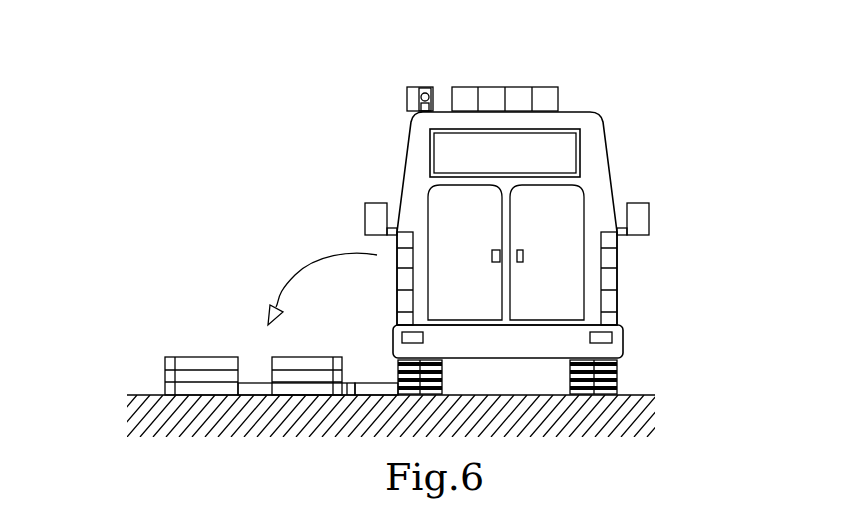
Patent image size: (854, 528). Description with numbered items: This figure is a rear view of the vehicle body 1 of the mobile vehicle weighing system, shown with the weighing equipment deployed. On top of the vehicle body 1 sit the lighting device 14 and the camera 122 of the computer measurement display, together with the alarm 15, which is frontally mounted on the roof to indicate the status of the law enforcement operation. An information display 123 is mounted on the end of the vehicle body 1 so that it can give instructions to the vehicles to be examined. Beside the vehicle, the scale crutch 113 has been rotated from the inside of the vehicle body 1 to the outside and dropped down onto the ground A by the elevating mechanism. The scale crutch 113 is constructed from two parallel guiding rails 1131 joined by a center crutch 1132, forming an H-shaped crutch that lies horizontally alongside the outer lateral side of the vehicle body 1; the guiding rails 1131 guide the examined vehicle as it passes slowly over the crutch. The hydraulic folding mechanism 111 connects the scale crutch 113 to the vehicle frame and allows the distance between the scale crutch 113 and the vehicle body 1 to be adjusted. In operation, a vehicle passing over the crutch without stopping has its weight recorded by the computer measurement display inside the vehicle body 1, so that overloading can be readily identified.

The vehicle body 1 is at (509, 198).
The lighting device 14 is at (374, 76).
The alarm 15 is at (505, 87).
The hydraulic folding mechanism 111 is at (370, 390).
The scale crutch 113 is at (206, 293).
The guiding rails 1131 is at (203, 356).
The center crutch 1132 is at (255, 390).
The camera 122 is at (425, 87).
The information display 123 is at (565, 130).
The ground A is at (143, 393).